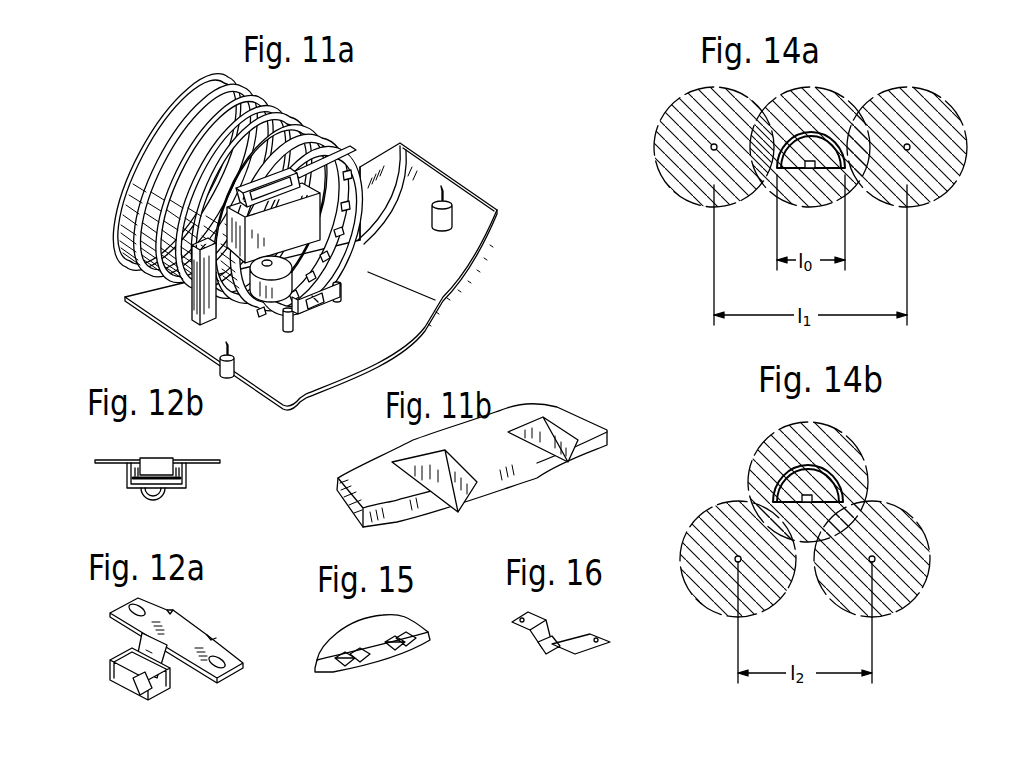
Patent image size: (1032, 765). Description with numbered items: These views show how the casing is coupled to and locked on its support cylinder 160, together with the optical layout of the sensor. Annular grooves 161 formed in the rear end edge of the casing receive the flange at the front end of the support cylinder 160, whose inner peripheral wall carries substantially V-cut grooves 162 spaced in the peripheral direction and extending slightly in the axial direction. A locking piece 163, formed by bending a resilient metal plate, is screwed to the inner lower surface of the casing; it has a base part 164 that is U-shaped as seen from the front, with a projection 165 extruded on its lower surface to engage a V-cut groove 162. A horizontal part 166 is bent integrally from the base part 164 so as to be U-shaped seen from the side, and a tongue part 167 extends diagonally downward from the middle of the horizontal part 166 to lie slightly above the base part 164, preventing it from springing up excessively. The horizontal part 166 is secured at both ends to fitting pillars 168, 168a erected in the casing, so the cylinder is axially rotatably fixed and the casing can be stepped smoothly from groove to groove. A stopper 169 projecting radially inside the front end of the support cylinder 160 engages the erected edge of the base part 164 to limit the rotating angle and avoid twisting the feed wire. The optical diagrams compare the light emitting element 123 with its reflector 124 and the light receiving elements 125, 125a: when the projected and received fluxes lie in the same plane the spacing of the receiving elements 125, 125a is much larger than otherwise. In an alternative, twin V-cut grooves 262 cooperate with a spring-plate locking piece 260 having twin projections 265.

In FIG. 11A, the support cylinder 160 is at (277, 115).
In FIG. 11B, the support cylinder 160 is at (548, 408).
In FIG. 11A, the annular grooves 161 is at (187, 313).
In FIG. 11A, the V-cut grooves 162 is at (353, 162).
In FIG. 11B, the V-cut grooves 162 is at (462, 510).
In FIG. 11A, the locking piece 163 is at (337, 285).
In FIG. 12B, the locking piece 163 is at (220, 461).
In FIG. 12A, the locking piece 163 is at (240, 670).
In FIG. 12B, the base part 164 is at (172, 490).
In FIG. 12A, the base part 164 is at (114, 676).
In FIG. 12B, the projection 165 is at (153, 500).
In FIG. 12A, the projection 165 is at (138, 694).
In FIG. 11A, the horizontal part 166 is at (317, 310).
In FIG. 12B, the horizontal part 166 is at (180, 462).
In FIG. 12A, the horizontal part 166 is at (188, 636).
In FIG. 12B, the tongue part 167 is at (148, 472).
In FIG. 12A, the tongue part 167 is at (148, 652).
In FIG. 11A, the fitting pillar 168 is at (290, 327).
In FIG. 11A, the fitting pillar 168a is at (341, 299).
In FIG. 11A, the stopper 169 is at (340, 150).
In FIG. 14A, the light emitting element 123 is at (795, 180).
In FIG. 14B, the light emitting element 123 is at (822, 500).
In FIG. 14A, the reflector 124 is at (822, 122).
In FIG. 14B, the reflector 124 is at (850, 467).
In FIG. 14A, the light receiving element 125 is at (712, 150).
In FIG. 14B, the light receiving element 125 is at (736, 561).
In FIG. 14A, the light receiving element 125a is at (910, 147).
In FIG. 14B, the light receiving element 125a is at (875, 559).
In FIG. 16, the locking piece 260 is at (534, 622).
In FIG. 15, the twin V-cut grooves 262 is at (410, 636).
In FIG. 16, the twin projections 265 is at (552, 652).